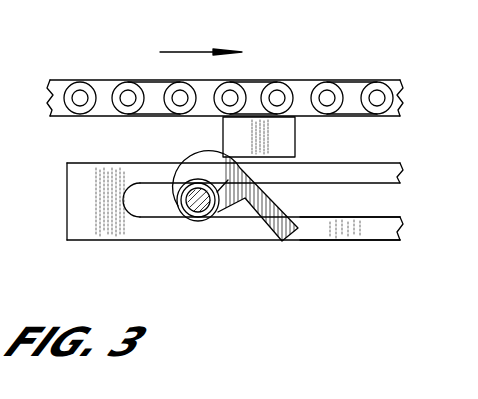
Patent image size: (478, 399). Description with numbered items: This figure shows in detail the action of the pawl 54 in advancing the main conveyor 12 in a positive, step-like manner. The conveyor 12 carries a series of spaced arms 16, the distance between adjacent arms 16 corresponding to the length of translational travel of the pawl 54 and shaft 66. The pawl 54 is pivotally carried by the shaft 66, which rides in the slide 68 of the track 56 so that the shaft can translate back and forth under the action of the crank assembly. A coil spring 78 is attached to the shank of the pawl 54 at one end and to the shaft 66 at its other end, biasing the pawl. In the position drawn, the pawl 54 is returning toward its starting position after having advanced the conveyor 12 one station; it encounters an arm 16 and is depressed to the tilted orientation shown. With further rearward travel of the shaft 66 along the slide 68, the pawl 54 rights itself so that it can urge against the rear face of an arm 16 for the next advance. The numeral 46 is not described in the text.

The main conveyor 12 is at (300, 70).
The arm 16 is at (250, 129).
The roller chain 46 is at (104, 80).
The pawl 54 is at (298, 236).
The track 56 is at (67, 176).
The shaft 66 is at (187, 208).
The slide 68 is at (377, 216).
The coil spring 78 is at (213, 222).